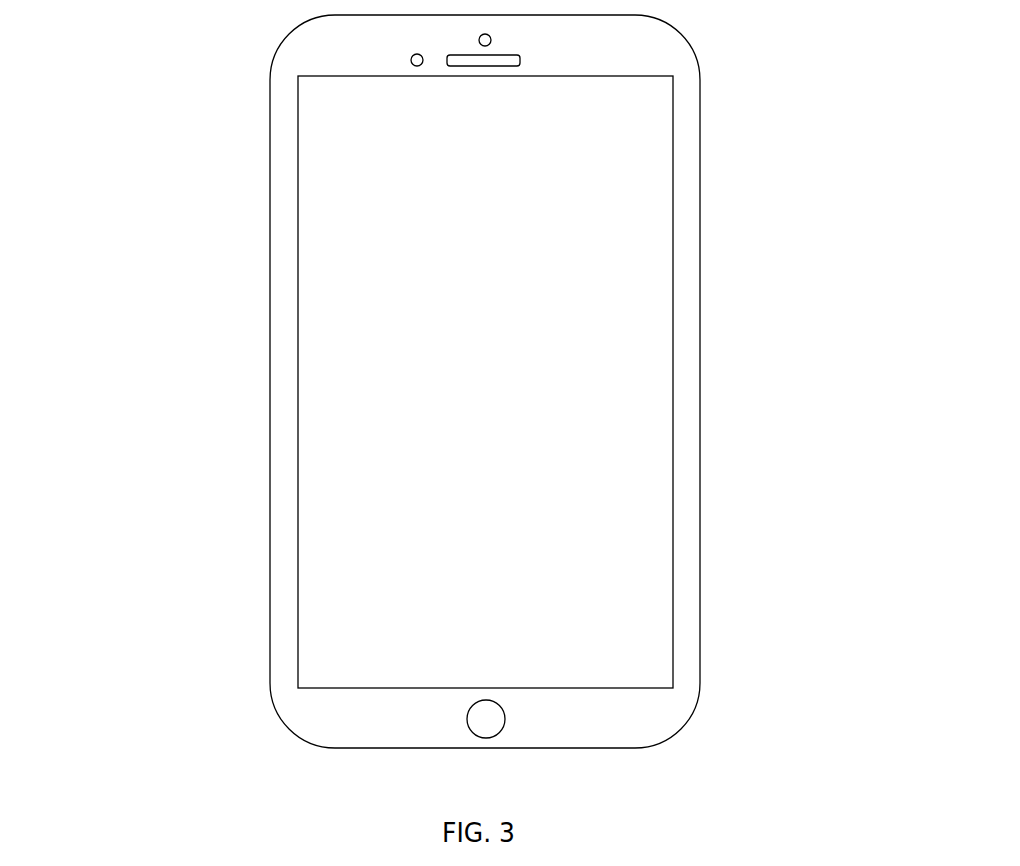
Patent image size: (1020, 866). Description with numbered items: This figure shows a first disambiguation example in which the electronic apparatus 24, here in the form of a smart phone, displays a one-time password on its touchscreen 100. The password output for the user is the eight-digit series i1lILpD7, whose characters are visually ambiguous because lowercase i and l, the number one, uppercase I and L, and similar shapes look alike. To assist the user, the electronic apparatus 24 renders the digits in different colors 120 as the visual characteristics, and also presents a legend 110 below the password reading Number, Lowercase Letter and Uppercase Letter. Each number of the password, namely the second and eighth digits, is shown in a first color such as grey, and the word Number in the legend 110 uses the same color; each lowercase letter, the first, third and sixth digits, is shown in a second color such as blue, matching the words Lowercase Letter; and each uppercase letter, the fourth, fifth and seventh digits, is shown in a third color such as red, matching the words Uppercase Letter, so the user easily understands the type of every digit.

The electronic apparatus 24 is at (238, 79).
The touchscreen 100 is at (328, 143).
The legend 110 is at (292, 598).
The colors 120 is at (121, 269).